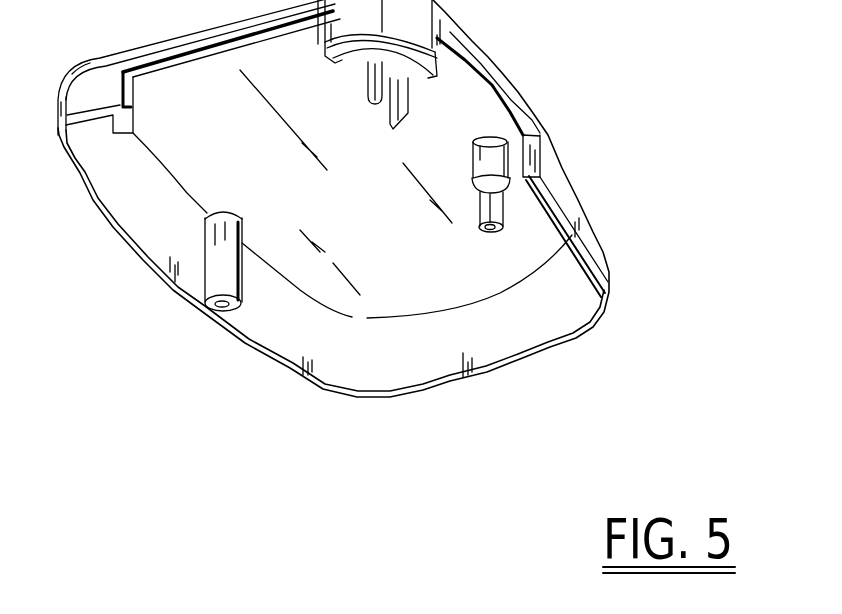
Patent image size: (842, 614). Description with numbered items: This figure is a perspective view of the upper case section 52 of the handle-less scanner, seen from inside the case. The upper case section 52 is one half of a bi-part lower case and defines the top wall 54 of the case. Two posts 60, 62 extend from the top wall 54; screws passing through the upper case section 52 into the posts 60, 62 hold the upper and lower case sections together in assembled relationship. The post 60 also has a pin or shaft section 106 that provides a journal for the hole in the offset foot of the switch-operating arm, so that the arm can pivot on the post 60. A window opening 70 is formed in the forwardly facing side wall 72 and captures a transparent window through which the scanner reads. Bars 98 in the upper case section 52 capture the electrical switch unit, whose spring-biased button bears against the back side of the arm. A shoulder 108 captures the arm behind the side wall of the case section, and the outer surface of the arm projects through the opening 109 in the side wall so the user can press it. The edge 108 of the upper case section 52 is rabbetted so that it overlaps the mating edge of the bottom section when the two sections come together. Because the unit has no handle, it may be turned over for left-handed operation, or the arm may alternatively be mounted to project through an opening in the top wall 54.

The upper case section 52 is at (263, 353).
The top wall 54 is at (400, 249).
The post 60 is at (495, 115).
The post 62 is at (238, 263).
The window opening 70 is at (137, 97).
The forwardly facing side wall 72 is at (113, 83).
The bars 98 is at (407, 117).
The pin or shaft section 106 is at (503, 212).
The shoulder 108 is at (92, 203).
The opening 109 is at (548, 133).